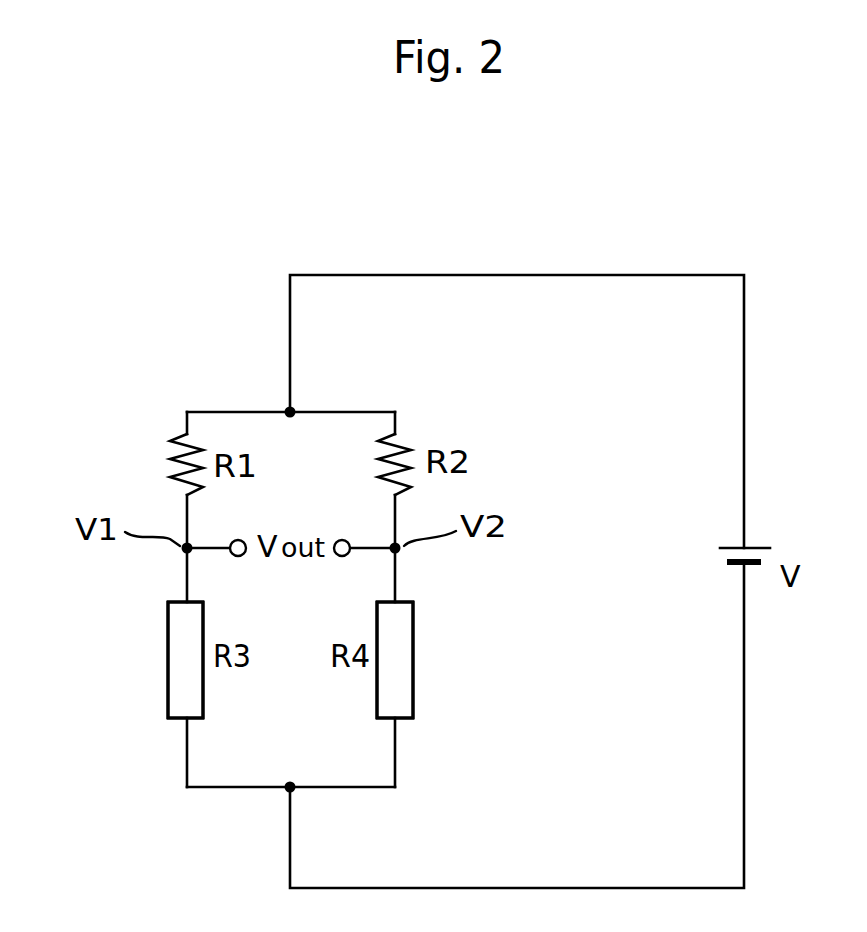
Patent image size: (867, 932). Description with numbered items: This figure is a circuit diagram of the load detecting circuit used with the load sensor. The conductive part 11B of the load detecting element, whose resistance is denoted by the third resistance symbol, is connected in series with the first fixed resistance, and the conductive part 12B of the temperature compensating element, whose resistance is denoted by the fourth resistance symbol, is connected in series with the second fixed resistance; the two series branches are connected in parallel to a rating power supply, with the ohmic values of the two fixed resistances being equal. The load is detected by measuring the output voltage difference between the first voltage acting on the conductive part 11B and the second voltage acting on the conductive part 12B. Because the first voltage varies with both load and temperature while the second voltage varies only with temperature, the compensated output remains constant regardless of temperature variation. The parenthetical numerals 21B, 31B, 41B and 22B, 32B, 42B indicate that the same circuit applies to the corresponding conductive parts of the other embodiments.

The conductive part 11B is at (180, 692).
The magnetoresistive element R3 (second embodiment) 21B is at (115, 729).
The magnetoresistive element R3 (third embodiment) 31B is at (160, 729).
The magnetoresistive element R3 (fourth embodiment) 41B is at (217, 729).
The conductive part 12B is at (402, 662).
The magnetoresistive element R4 (second embodiment) 22B is at (467, 660).
The magnetoresistive element R4 (third embodiment) 32B is at (508, 660).
The magnetoresistive element R4 (fourth embodiment) 42B is at (548, 660).